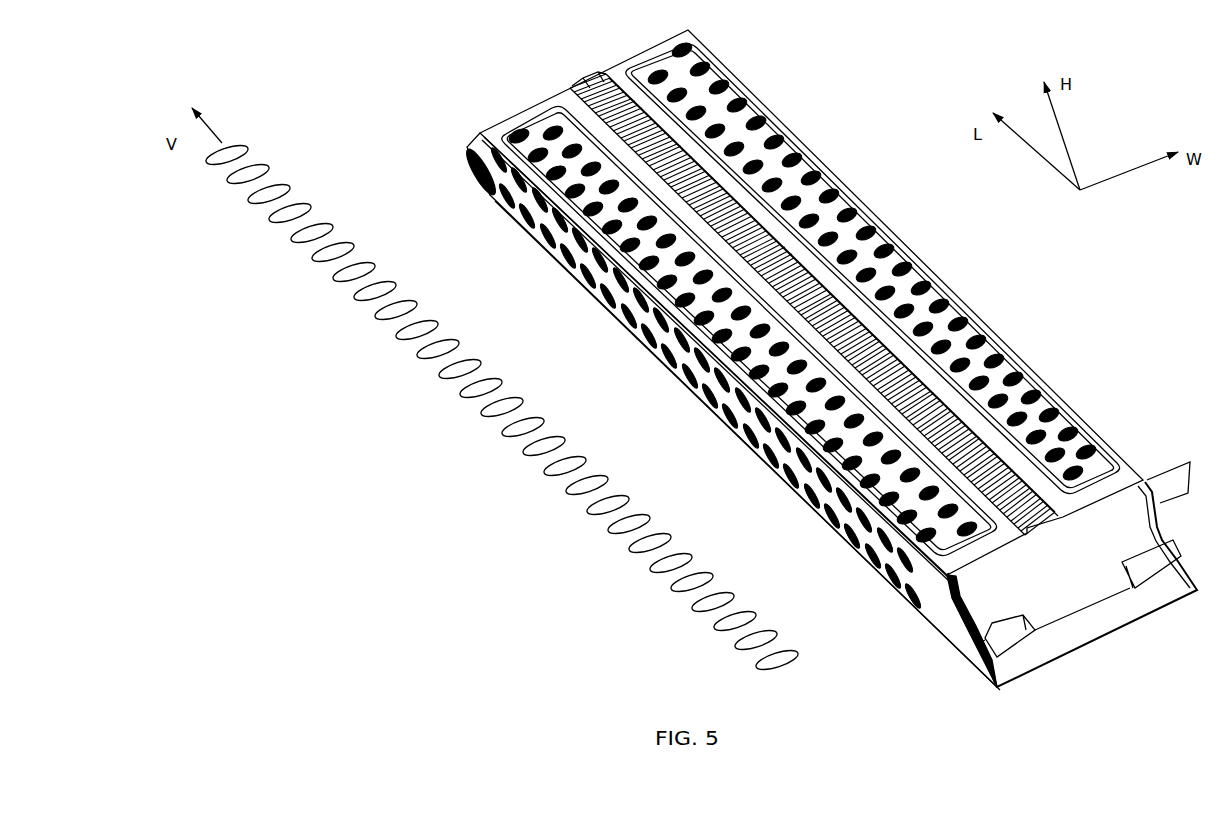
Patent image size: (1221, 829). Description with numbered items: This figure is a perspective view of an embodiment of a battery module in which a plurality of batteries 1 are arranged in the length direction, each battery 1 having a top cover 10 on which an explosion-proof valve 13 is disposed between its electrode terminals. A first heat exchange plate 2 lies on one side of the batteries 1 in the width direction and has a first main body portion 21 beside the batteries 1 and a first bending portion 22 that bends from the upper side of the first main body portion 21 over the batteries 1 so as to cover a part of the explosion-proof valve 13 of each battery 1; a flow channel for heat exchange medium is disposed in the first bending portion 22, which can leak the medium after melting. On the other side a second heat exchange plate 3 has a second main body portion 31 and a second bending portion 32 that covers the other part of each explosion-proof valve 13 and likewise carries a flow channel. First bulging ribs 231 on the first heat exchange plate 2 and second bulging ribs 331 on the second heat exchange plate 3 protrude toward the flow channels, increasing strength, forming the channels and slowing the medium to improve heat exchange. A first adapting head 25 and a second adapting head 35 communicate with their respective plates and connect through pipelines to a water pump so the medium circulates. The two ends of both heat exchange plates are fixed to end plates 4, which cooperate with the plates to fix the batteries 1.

The battery 1 is at (573, 85).
The first heat exchange plate 2 is at (765, 412).
The first main body portion 21 is at (549, 268).
The first bending portion 22 is at (615, 258).
The first bulging ribs 231 is at (622, 330).
The first adapting head 25 is at (1045, 631).
The second heat exchange plate 3 is at (837, 363).
The second main body portion 31 is at (1160, 500).
The second bending portion 32 is at (799, 297).
The second bulging ribs 331 is at (903, 243).
The second adapting head 35 is at (1133, 593).
The end plate 4 is at (834, 350).
The top cover 10 is at (567, 90).
The explosion-proof valve 13 is at (598, 64).